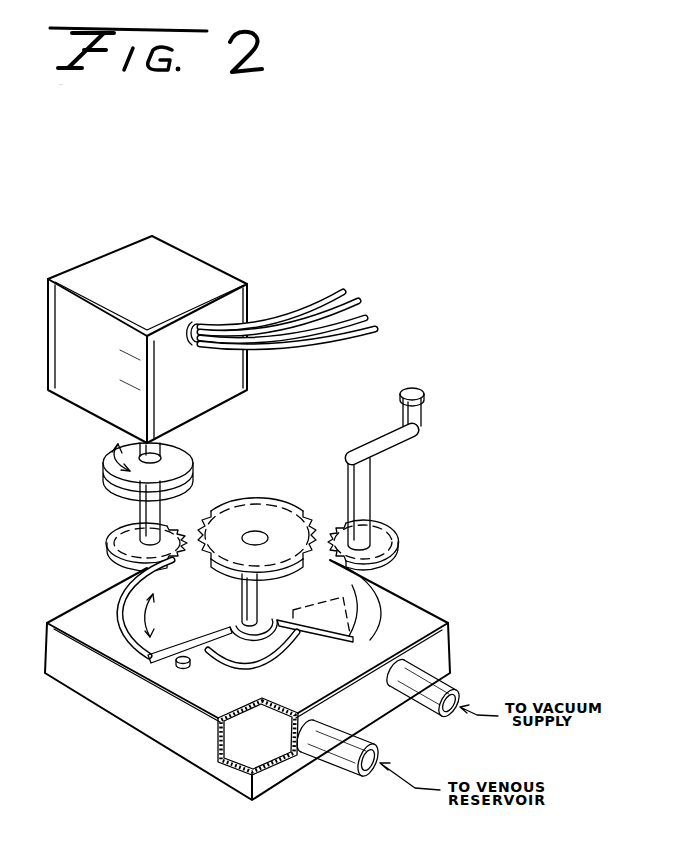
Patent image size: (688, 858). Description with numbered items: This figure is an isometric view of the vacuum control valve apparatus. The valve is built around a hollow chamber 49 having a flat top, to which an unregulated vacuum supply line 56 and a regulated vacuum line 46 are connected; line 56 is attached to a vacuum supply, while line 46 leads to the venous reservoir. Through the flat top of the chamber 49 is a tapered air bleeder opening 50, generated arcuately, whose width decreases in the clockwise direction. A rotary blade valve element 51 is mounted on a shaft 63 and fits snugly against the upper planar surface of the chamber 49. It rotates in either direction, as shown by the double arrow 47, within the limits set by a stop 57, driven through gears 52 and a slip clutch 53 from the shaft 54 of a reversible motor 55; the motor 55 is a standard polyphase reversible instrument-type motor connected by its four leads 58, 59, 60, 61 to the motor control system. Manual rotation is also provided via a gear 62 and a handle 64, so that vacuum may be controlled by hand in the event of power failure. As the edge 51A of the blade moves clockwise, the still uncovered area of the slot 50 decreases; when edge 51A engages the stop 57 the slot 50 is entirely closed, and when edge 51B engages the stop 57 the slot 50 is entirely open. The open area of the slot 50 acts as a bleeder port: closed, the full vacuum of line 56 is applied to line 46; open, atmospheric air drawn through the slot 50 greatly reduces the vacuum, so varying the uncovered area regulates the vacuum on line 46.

The regulated vacuum line 46 is at (340, 757).
The double arrow 47 is at (110, 458).
The chamber 49 is at (440, 628).
The air bleeder opening 50 is at (300, 648).
The rotary blade valve element 51 is at (375, 578).
The edge of valve element 51A is at (353, 632).
The edge of valve element 51B is at (150, 662).
The gears 52 is at (165, 522).
The slip clutch 53 is at (178, 462).
The shaft 54 is at (162, 449).
The reversible motor 55 is at (122, 375).
The unregulated vacuum supply line 56 is at (455, 686).
The stop 57 is at (187, 668).
The motor lead 58 is at (338, 292).
The motor lead 59 is at (355, 302).
The motor lead 60 is at (362, 319).
The motor lead 61 is at (372, 331).
The gear 62 is at (396, 535).
The shaft 63 is at (241, 599).
The handle 64 is at (395, 447).